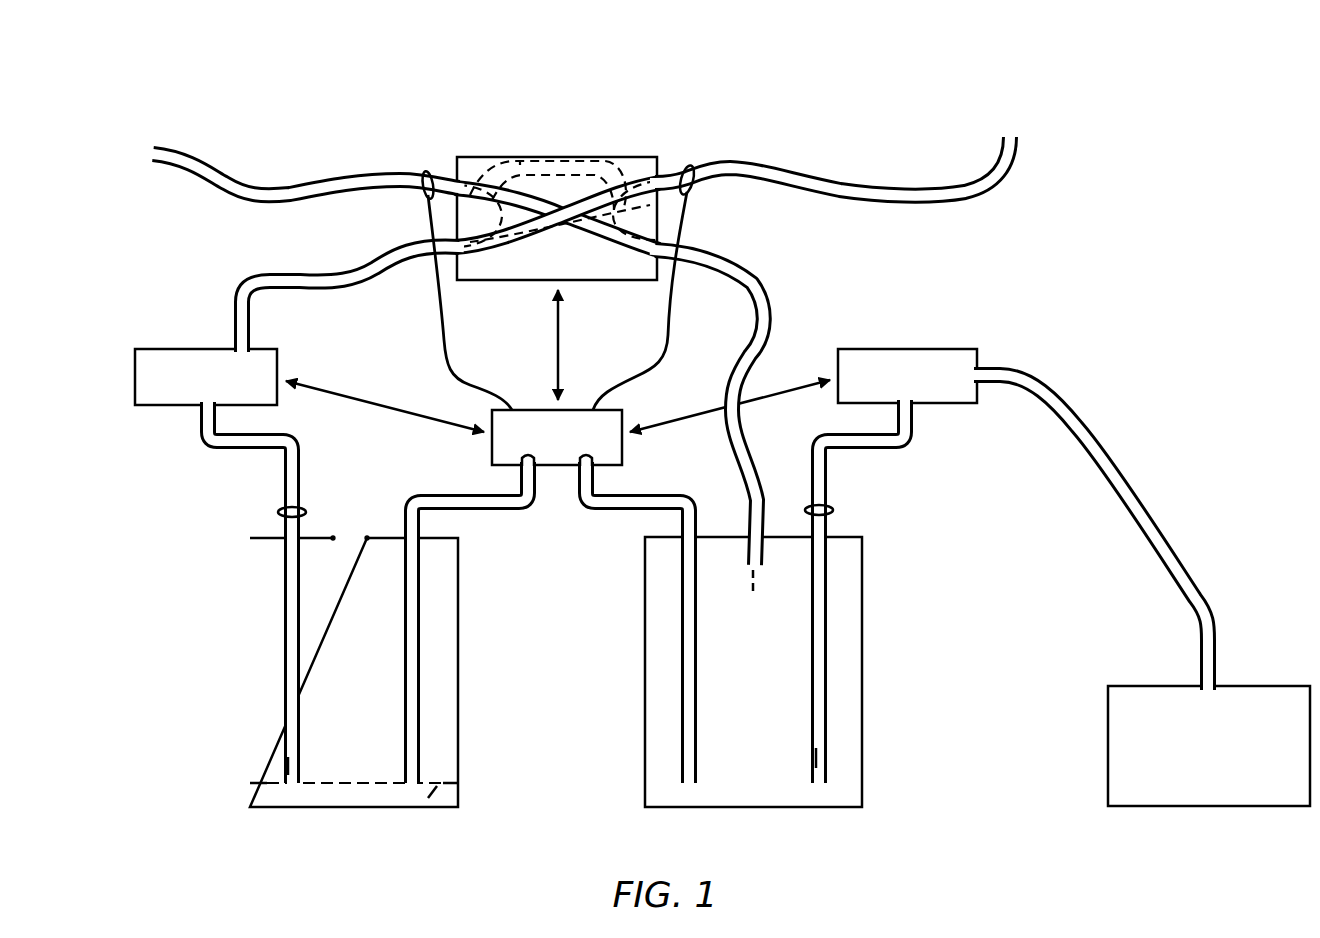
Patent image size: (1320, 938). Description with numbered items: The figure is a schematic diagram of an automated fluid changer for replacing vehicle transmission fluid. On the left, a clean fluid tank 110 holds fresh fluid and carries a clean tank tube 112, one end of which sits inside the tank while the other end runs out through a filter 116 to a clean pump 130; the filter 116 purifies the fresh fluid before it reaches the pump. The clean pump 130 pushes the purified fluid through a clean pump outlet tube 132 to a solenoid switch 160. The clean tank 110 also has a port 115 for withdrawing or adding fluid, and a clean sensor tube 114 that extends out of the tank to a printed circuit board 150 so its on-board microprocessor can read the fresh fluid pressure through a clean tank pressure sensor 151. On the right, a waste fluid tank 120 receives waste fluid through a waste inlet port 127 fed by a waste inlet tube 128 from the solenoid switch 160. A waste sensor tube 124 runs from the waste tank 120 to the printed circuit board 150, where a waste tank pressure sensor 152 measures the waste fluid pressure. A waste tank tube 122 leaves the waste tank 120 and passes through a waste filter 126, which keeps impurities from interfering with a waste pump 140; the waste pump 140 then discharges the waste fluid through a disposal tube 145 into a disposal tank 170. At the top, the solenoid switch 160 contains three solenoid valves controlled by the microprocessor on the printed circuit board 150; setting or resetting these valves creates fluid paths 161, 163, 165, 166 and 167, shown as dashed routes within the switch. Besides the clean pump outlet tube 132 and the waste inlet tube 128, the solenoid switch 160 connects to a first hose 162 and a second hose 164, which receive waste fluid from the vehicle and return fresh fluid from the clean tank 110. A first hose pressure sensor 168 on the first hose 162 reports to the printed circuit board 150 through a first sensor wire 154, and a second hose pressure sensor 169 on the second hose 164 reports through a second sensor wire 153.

The clean fluid tank 110 is at (250, 760).
The clean tank tube 112 is at (282, 640).
The clean sensor tube 114 is at (420, 650).
The port 115 is at (347, 533).
The filter 116 is at (278, 512).
The waste fluid tank 120 is at (862, 770).
The waste tank tube 122 is at (828, 658).
The waste sensor tube 124 is at (680, 645).
The waste filter 126 is at (835, 510).
The waste inlet port 127 is at (758, 535).
The waste inlet tube 128 is at (770, 323).
The clean pump 130 is at (135, 372).
The clean pump outlet tube 132 is at (230, 295).
The waste pump 140 is at (905, 349).
The disposal tube 145 is at (1130, 488).
The printed circuit board 150 is at (622, 409).
The clean tank pressure sensor 151 is at (492, 450).
The waste tank pressure sensor 152 is at (618, 452).
The second sensor wire 153 is at (443, 362).
The first sensor wire 154 is at (642, 365).
The solenoid switch 160 is at (615, 155).
The fluid path 161 is at (660, 208).
The first hose 162 is at (862, 186).
The fluid path 163 is at (500, 217).
The second hose 164 is at (268, 180).
The fluid path 165 is at (581, 162).
The fluid path 166 is at (539, 172).
The fluid path 167 is at (484, 172).
The first hose pressure sensor 168 is at (690, 167).
The second hose pressure sensor 169 is at (427, 172).
The disposal tank 170 is at (1262, 686).